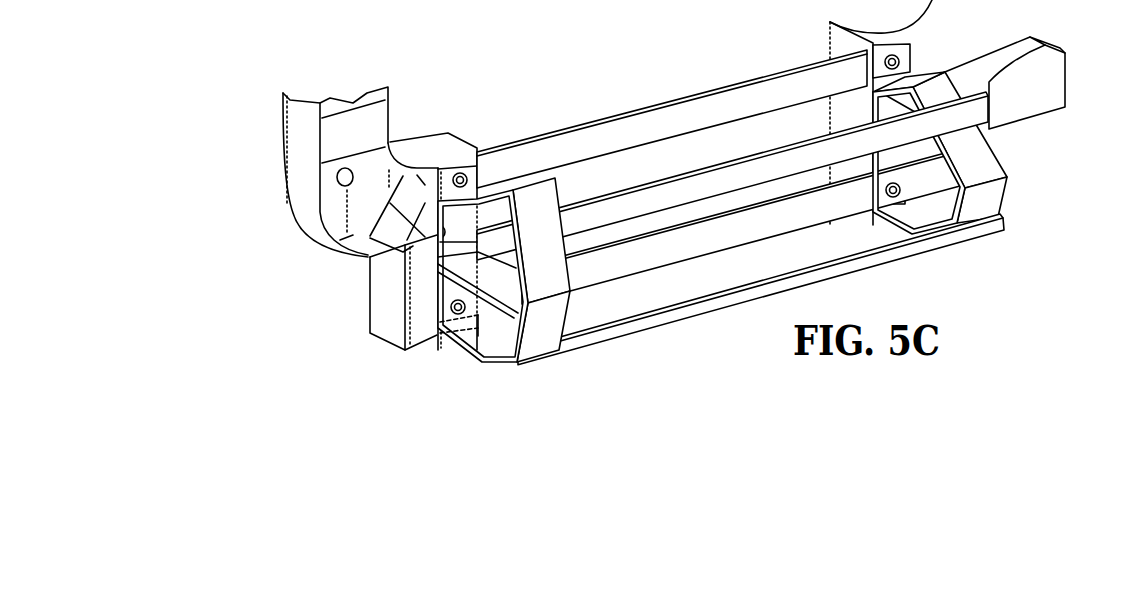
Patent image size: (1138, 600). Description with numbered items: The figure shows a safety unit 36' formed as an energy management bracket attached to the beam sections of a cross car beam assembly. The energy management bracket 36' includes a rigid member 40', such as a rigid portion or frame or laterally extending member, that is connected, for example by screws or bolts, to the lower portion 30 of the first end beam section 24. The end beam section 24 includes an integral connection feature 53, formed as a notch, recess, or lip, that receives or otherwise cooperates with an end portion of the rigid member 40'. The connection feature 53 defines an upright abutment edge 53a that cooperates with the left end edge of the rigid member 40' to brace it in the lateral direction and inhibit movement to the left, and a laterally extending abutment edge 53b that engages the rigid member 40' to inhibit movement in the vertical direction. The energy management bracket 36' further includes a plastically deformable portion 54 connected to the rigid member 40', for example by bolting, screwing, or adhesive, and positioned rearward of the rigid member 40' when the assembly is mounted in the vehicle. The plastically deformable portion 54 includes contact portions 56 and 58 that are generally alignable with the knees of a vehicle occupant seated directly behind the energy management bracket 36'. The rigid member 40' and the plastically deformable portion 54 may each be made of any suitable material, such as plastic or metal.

The first end beam section 24 is at (266, 134).
The lower portion 30 is at (307, 234).
The connection feature 53 is at (481, 134).
The upright abutment edge 53a is at (404, 246).
The laterally extending abutment edge 53b is at (890, 57).
The rigid member 40' is at (672, 111).
The safety unit 36' is at (460, 296).
The plastically deformable portion 54 is at (1031, 150).
The contact portion 56 is at (546, 368).
The contact portion 58 is at (986, 250).